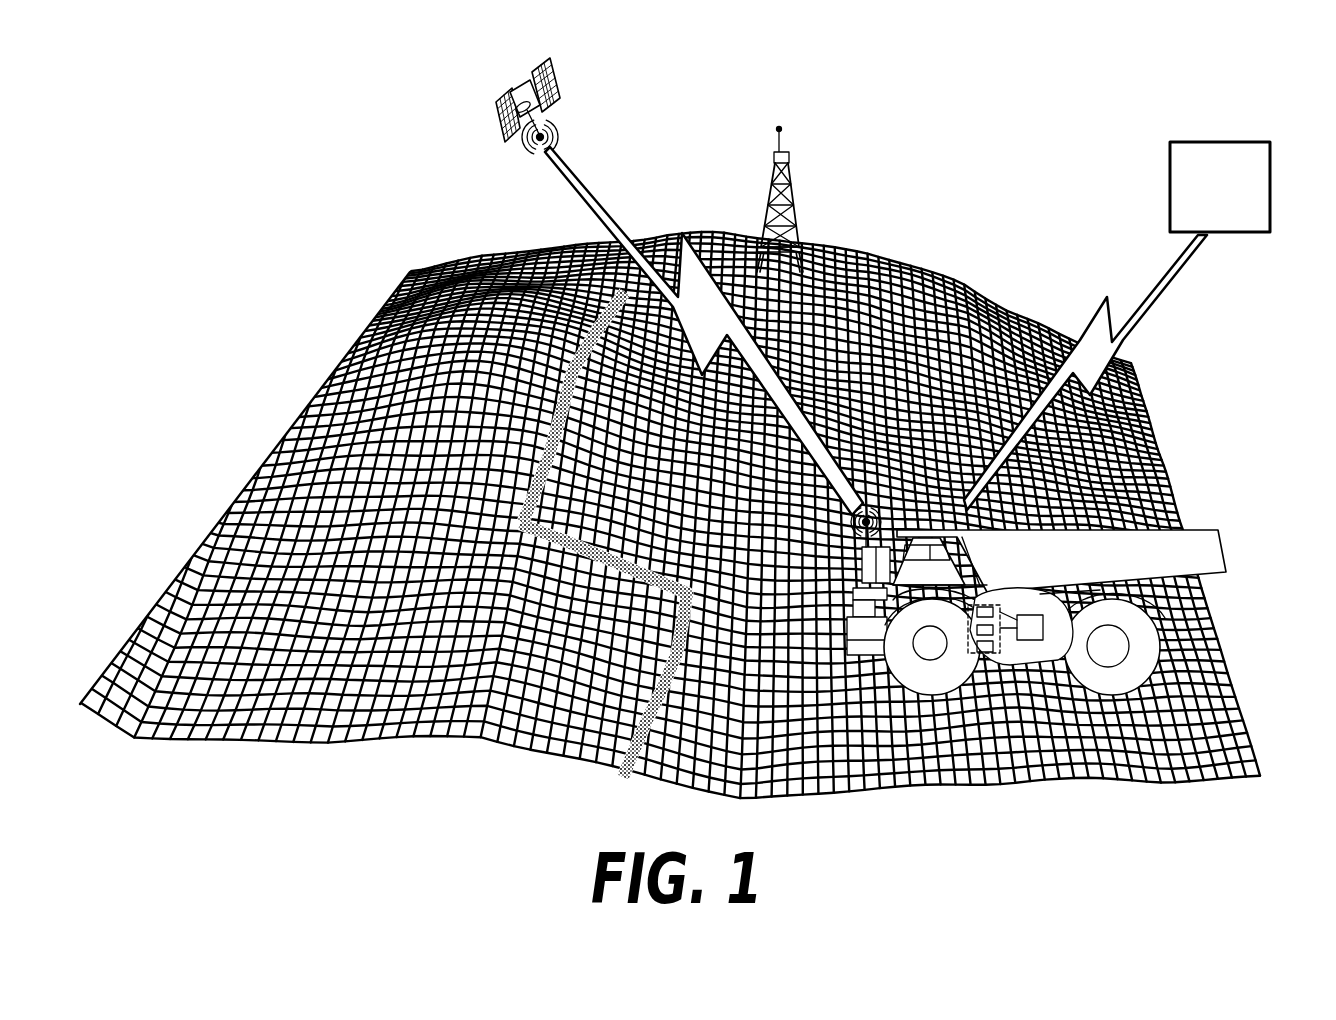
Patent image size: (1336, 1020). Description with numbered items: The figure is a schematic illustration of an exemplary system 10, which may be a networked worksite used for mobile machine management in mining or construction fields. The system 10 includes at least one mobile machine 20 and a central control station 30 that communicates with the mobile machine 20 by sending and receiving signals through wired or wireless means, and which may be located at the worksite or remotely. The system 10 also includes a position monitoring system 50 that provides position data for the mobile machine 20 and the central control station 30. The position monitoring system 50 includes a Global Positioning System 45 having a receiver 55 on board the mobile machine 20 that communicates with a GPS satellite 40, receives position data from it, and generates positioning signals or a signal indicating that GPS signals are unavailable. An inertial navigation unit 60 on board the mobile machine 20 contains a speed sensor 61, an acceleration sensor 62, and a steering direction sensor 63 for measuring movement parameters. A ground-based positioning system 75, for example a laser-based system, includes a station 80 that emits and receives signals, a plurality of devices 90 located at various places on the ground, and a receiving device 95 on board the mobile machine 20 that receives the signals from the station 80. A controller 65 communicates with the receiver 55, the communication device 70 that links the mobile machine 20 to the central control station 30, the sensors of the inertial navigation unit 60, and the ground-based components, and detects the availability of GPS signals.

The system 10 is at (203, 57).
The mobile machine 20 is at (1025, 575).
The central control station 30 is at (1237, 205).
The GPS satellite 40 is at (556, 76).
The Global Positioning System (GPS) 45 is at (480, 150).
The position monitoring system 50 is at (323, 195).
The receiver 55 is at (858, 540).
The inertial navigation unit 60 is at (1013, 672).
The speed sensor 61 is at (855, 602).
The acceleration sensor 62 is at (852, 644).
The steering direction sensor 63 is at (890, 670).
The controller 65 is at (1155, 613).
The communication device 70 is at (985, 505).
The ground-based positioning system 75 is at (860, 207).
The station 80 is at (792, 164).
The devices 90 is at (542, 424).
The receiving device 95 is at (1163, 514).